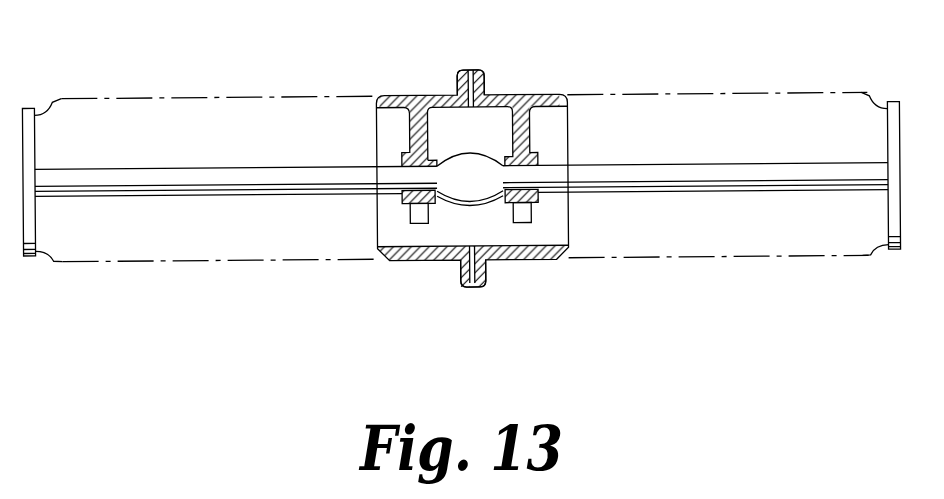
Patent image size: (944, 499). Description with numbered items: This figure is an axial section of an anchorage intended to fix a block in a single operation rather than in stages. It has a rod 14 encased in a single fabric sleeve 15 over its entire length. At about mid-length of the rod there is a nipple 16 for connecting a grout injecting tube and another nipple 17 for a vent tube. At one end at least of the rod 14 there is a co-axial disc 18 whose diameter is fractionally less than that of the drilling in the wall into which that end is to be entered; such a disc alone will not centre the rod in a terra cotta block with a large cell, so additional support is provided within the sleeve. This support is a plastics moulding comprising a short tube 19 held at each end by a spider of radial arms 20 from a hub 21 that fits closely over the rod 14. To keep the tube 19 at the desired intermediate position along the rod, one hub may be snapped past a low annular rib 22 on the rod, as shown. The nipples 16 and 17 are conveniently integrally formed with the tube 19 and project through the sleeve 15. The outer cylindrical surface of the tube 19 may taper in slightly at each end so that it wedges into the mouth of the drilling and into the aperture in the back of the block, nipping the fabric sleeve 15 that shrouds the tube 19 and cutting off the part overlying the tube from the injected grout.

The rod 14 is at (313, 186).
The fabric sleeve 15 is at (657, 92).
The nipple 16 is at (479, 73).
The nipple 17 is at (487, 275).
The co-axial disc 18 is at (28, 255).
The short tube 19 is at (412, 93).
The radial arms 20 is at (560, 134).
The hub 21 is at (546, 196).
The low annular rib 22 is at (477, 167).